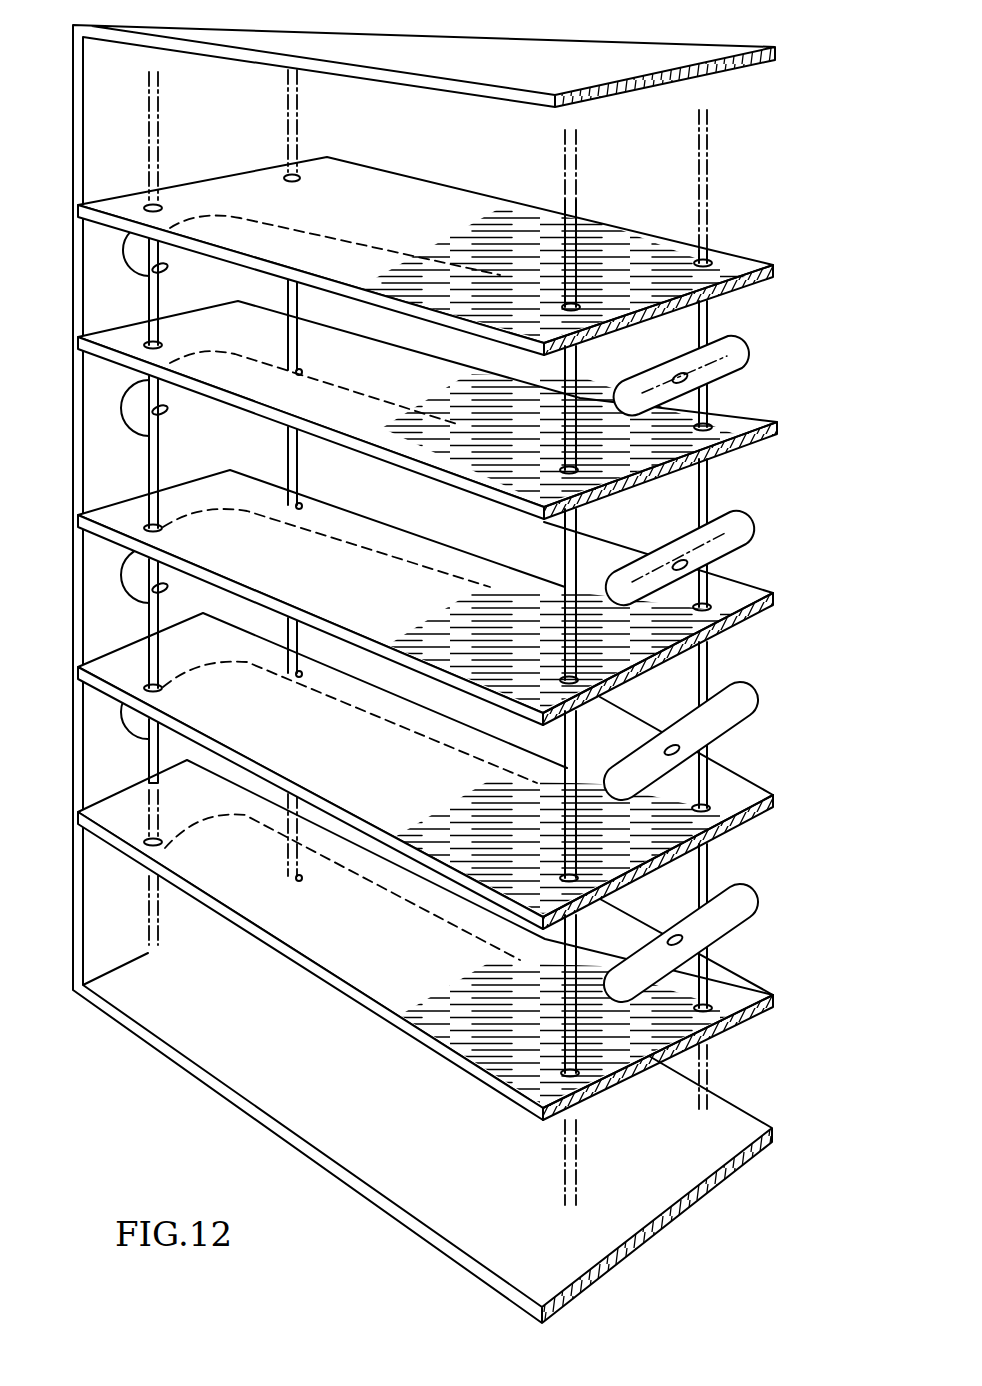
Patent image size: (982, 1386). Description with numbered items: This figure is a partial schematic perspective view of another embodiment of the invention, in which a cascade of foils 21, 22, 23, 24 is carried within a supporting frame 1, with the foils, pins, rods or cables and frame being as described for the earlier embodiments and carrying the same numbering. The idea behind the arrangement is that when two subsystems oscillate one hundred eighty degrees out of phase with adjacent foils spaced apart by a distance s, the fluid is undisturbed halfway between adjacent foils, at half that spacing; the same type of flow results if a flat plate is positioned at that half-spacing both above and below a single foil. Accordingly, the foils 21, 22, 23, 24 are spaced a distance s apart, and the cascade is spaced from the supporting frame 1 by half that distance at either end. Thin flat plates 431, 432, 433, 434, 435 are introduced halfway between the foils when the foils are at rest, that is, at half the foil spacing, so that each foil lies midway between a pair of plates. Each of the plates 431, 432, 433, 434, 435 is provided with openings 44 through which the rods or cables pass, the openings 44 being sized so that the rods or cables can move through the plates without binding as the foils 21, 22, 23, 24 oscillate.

The frame 1 is at (242, 1036).
The opening 44 is at (716, 258).
The thin flat plate 435 is at (750, 303).
The thin flat plate 434 is at (750, 451).
The thin flat plate 433 is at (750, 626).
The thin flat plate 432 is at (750, 832).
The thin flat plate 431 is at (750, 1020).
The roll 24 is at (700, 373).
The roll 23 is at (696, 552).
The roll 22 is at (695, 741).
The roll 21 is at (695, 943).